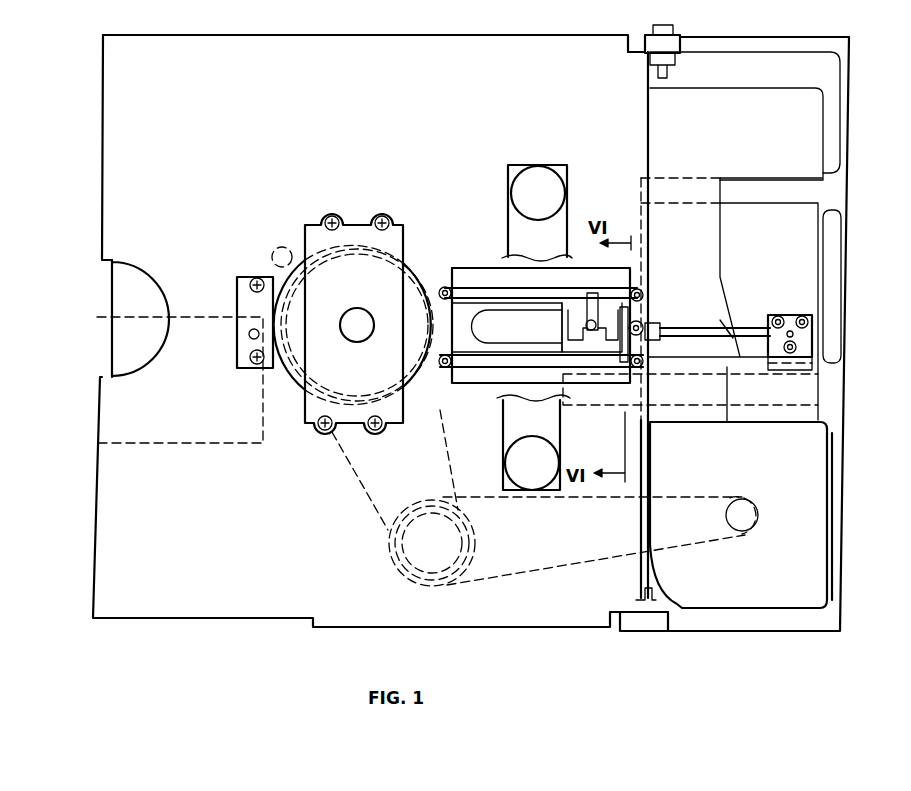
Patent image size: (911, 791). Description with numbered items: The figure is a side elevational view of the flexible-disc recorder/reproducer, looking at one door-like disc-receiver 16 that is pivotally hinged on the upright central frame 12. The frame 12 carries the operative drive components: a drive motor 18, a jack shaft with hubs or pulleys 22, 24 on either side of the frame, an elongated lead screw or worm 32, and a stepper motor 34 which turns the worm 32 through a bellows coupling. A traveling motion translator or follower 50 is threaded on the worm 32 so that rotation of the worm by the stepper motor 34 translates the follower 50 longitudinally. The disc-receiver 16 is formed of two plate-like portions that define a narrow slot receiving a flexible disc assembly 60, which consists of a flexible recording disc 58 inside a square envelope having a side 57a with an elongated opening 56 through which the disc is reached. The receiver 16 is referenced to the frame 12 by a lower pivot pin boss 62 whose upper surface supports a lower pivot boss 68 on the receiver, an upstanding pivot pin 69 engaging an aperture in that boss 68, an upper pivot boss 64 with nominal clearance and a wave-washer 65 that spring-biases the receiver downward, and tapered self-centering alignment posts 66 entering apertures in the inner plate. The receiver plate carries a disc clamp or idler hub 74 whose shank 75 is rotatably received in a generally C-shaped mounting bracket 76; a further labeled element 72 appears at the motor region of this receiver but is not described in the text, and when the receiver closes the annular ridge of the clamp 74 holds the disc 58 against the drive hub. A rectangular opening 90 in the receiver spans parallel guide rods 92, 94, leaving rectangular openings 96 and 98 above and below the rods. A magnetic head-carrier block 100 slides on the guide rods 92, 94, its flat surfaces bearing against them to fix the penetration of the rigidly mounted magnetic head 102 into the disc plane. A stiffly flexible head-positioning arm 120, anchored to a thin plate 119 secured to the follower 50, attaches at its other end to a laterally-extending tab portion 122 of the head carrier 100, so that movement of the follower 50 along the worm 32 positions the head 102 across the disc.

The upright central frame 12 is at (744, 45).
The disc-receiver 16 is at (185, 109).
The drive motor 18 is at (802, 501).
The pulley 22 is at (432, 543).
The pulley 24 is at (478, 548).
The lead screw or worm 32 is at (770, 400).
The stepper motor 34 is at (125, 414).
The traveling motion translator or follower 50 is at (728, 318).
The elongated opening 56 is at (478, 318).
The envelope side 57a is at (369, 364).
The flexible recording disc 58 is at (555, 338).
The flexible disc assembly 60 is at (120, 296).
The lower pivot pin boss 62 is at (648, 622).
The upper pivot boss 64 is at (657, 42).
The wave-washer 65 is at (660, 55).
The alignment post 66 is at (282, 247).
The lower pivot boss 68 is at (655, 604).
The pivot pin 69 is at (655, 597).
The drive motor 72 is at (386, 258).
The disc clamp or idler hub 74 is at (292, 370).
The shank 75 is at (368, 335).
The C-shaped mounting bracket 76 is at (357, 228).
The rectangular opening 90 is at (464, 264).
The upper guide rod 92 is at (506, 292).
The lower guide rod 94 is at (485, 360).
The rectangular opening 96 is at (590, 280).
The rectangular opening 98 is at (556, 378).
The magnetic head-carrier block 100 is at (541, 371).
The magnetic head 102 is at (578, 320).
The plate 119 is at (808, 337).
The head-positioning arm 120 is at (757, 330).
The tab portion 122 is at (655, 327).